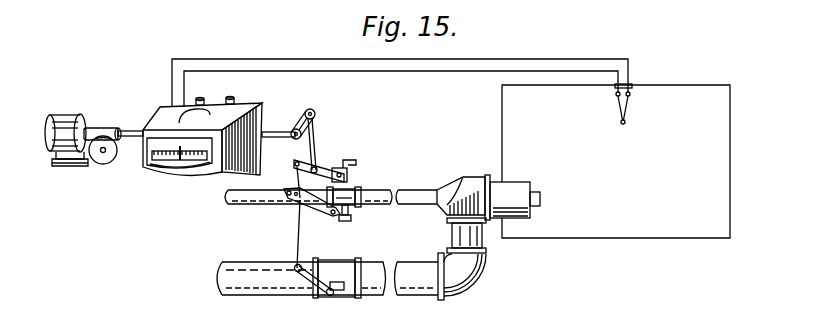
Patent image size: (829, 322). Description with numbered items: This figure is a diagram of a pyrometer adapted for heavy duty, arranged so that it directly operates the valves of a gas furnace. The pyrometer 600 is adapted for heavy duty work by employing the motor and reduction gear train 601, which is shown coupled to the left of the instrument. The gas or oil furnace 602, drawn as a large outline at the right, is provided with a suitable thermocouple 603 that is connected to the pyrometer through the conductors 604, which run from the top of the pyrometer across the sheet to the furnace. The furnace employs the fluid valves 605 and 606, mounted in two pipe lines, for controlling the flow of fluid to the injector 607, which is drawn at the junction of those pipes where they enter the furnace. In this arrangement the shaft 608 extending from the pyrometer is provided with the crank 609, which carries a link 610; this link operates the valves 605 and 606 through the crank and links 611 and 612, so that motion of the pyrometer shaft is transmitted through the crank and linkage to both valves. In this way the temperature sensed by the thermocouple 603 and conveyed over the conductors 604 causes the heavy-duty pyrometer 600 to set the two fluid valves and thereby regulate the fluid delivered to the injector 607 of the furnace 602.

The pyrometer 600 is at (197, 178).
The motor and reduction gear train 601 is at (107, 104).
The gas or oil furnace 602 is at (668, 95).
The thermocouple 603 is at (630, 110).
The conductors 604 is at (528, 71).
The fluid valve 605 is at (352, 214).
The fluid valve 606 is at (347, 262).
The injector 607 is at (525, 190).
The shaft 608 is at (277, 130).
The crank 609 is at (313, 116).
The link 610 is at (316, 142).
The crank and link 611 is at (327, 163).
The crank and link 612 is at (302, 218).